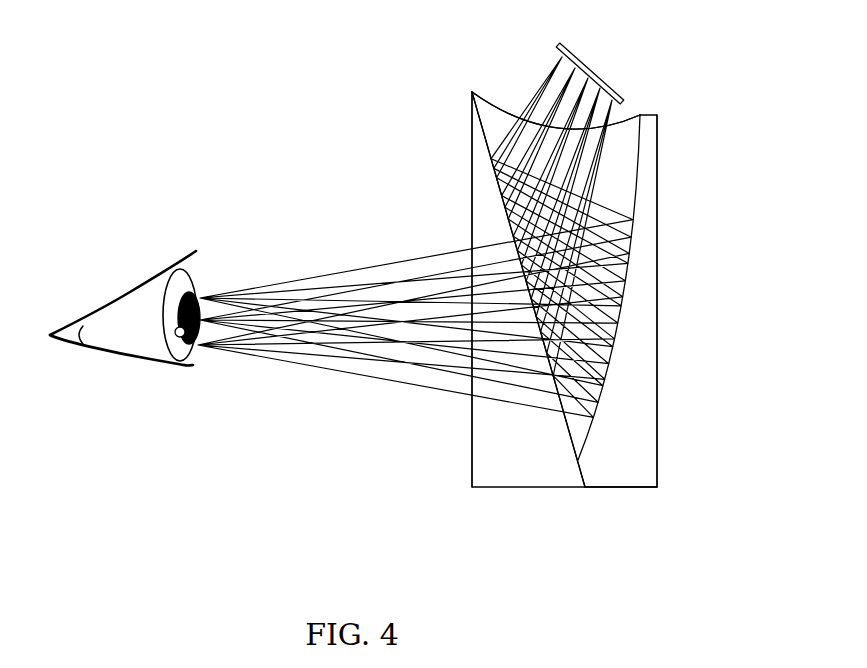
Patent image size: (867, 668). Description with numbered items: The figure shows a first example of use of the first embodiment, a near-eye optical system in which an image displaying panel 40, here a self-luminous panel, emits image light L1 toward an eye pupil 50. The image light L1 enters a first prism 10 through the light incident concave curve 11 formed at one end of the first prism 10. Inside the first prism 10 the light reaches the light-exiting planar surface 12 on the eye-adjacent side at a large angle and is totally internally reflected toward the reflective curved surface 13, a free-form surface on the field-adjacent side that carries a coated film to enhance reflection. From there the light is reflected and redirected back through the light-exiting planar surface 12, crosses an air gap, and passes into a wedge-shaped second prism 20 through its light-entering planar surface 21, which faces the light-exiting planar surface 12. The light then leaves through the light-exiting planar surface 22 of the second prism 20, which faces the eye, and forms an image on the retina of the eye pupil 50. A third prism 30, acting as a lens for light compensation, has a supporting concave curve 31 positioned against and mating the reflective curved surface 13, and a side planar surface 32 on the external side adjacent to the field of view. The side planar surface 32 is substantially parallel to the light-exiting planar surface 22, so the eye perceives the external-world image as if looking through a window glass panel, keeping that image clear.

The first prism 10 is at (500, 96).
The light incident concave curve 11 is at (627, 116).
The light-exiting planar surface 12 is at (480, 117).
The reflective curved surface 13 is at (666, 287).
The second prism 20 is at (522, 255).
The light-entering planar surface 21 is at (486, 146).
The light-exiting planar surface 22 is at (470, 232).
The third prism 30 is at (666, 301).
The supporting concave curve 31 is at (631, 173).
The side planar surface 32 is at (658, 235).
The image displaying panel 40 is at (598, 76).
The eye pupil 50 is at (133, 373).
The image light L1 is at (372, 264).